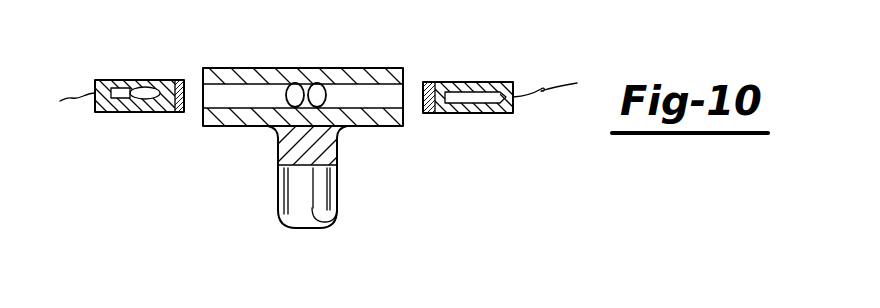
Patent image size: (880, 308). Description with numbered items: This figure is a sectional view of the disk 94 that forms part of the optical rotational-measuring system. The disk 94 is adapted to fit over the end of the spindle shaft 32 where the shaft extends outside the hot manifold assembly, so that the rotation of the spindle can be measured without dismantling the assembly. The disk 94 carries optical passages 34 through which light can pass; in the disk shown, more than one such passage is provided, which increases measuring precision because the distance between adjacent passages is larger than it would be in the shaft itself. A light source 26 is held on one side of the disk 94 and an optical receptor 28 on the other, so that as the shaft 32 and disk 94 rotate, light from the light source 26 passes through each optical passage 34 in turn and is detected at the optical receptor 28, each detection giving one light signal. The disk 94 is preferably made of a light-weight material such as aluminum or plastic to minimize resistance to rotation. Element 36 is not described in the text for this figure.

The light source 26 is at (115, 113).
The optical receptor 28 is at (463, 113).
The spindle shaft 32 is at (276, 205).
The optical passage 34 is at (316, 84).
The lead wire 36 is at (84, 97).
The disk 94 is at (385, 127).